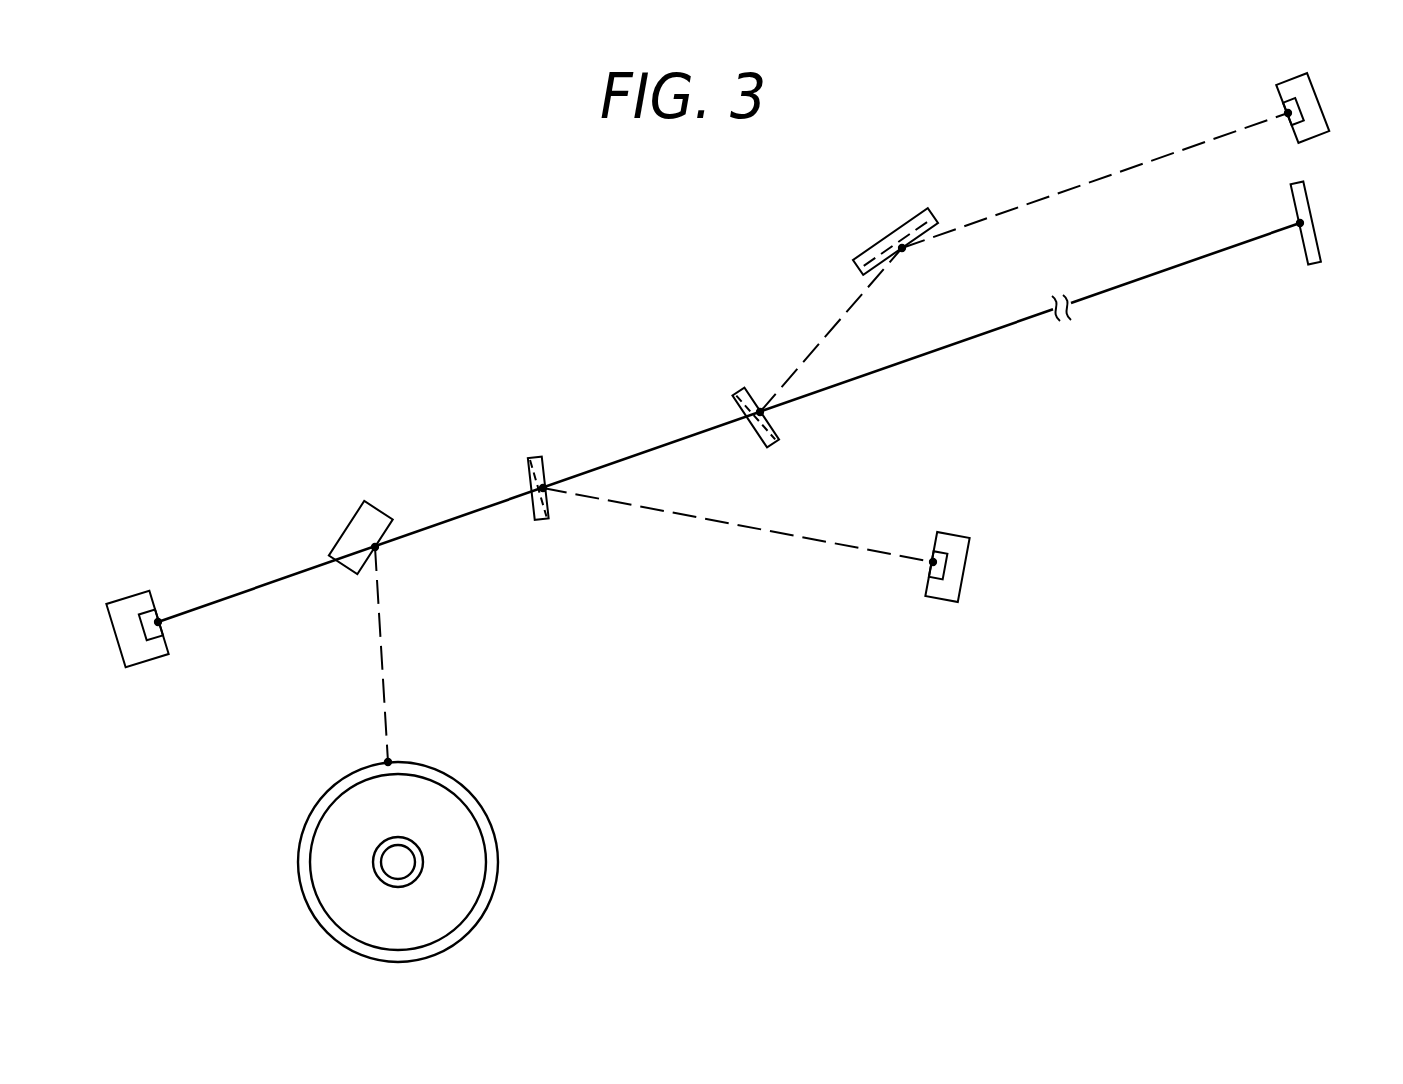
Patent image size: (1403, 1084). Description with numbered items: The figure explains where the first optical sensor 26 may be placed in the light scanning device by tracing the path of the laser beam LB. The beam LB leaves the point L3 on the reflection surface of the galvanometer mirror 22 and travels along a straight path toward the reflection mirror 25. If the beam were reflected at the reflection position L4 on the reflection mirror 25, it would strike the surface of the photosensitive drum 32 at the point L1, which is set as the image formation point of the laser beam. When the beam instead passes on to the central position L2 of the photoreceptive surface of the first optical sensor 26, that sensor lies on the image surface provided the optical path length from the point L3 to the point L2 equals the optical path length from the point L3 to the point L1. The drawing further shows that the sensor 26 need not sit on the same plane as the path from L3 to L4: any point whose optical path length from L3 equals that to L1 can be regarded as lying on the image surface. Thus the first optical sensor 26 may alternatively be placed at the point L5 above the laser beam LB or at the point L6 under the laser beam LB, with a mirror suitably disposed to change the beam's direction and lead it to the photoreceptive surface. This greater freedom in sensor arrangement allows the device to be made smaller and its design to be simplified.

The galvanometer mirror 22 is at (1315, 217).
The reflection mirror 25 is at (353, 520).
The first optical sensor 26 is at (142, 665).
The photosensitive drum 32 is at (470, 835).
The point on the photosensitive drum surface L1 is at (390, 762).
The central position of the photoreceptive surface L2 is at (160, 623).
The point on the reflection surface of the galvanometer mirror L3 is at (1300, 225).
The point on the reflection mirror L4 is at (377, 547).
The point above the laser beam L5 is at (1287, 114).
The point under the laser beam L6 is at (932, 563).
The laser beam LB is at (702, 432).